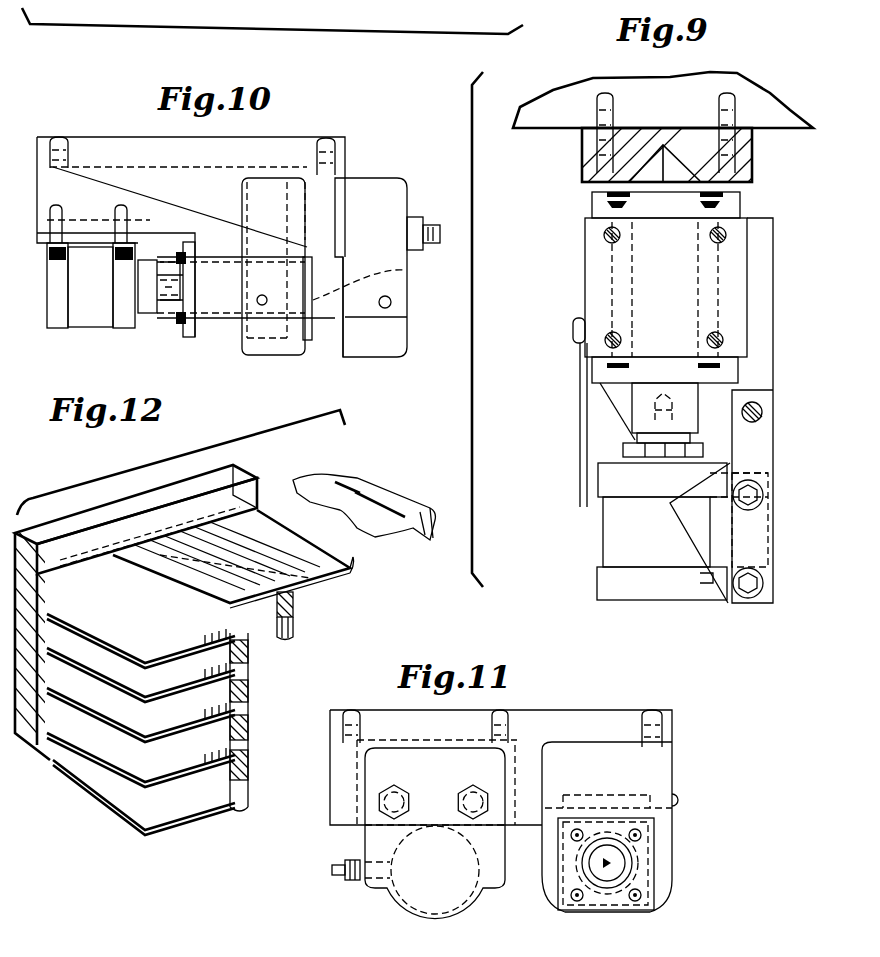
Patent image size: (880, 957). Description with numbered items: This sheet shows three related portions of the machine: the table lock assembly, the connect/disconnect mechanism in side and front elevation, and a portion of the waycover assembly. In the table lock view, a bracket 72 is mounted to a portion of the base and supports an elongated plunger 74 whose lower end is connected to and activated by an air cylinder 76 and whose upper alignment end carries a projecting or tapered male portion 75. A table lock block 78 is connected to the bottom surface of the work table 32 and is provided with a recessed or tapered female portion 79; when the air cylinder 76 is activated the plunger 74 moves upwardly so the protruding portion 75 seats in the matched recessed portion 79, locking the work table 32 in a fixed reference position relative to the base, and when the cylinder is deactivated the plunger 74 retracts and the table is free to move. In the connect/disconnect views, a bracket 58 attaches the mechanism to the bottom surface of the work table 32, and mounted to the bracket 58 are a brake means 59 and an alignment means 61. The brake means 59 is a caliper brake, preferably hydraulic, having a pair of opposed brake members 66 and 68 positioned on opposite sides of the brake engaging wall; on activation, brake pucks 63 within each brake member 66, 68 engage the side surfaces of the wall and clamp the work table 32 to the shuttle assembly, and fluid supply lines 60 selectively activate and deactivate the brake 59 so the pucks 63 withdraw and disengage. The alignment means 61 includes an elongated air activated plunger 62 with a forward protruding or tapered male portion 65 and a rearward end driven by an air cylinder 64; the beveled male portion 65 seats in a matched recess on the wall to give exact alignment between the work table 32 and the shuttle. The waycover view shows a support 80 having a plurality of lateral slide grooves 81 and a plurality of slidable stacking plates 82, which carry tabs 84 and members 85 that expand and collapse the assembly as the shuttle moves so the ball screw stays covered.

In FIG. 9, the work table 32 is at (703, 90).
In FIG. 10, the bracket 58 is at (223, 185).
In FIG. 11, the bracket 58 is at (530, 727).
In FIG. 10, the brake means 59 is at (357, 202).
In FIG. 11, the brake means 59 is at (388, 770).
In FIG. 11, the fluid supply lines 60 is at (332, 870).
In FIG. 10, the alignment means 61 is at (163, 270).
In FIG. 11, the alignment means 61 is at (642, 843).
In FIG. 10, the plunger 62 is at (172, 302).
In FIG. 10, the brake pucks 63 is at (391, 302).
In FIG. 11, the brake pucks 63 is at (483, 883).
In FIG. 10, the air cylinder 64 is at (90, 305).
In FIG. 10, the protruding male portion 65 is at (372, 279).
In FIG. 11, the protruding male portion 65 is at (615, 858).
In FIG. 10, the brake member 66 is at (390, 312).
In FIG. 11, the brake member 66 is at (368, 843).
In FIG. 10, the brake member 68 is at (268, 345).
In FIG. 9, the bracket 72 is at (755, 440).
In FIG. 9, the plunger 74 is at (683, 407).
In FIG. 9, the protruding male portion 75 is at (640, 215).
In FIG. 9, the air cylinder 76 is at (625, 537).
In FIG. 9, the table lock block 78 is at (582, 152).
In FIG. 9, the recessed female portion 79 is at (752, 155).
In FIG. 12, the support 80 is at (105, 517).
In FIG. 12, the lateral slide grooves 81 is at (36, 572).
In FIG. 12, the stacking plates 82 is at (325, 560).
In FIG. 12, the tabs 84 is at (293, 613).
In FIG. 12, the members 85 is at (423, 537).